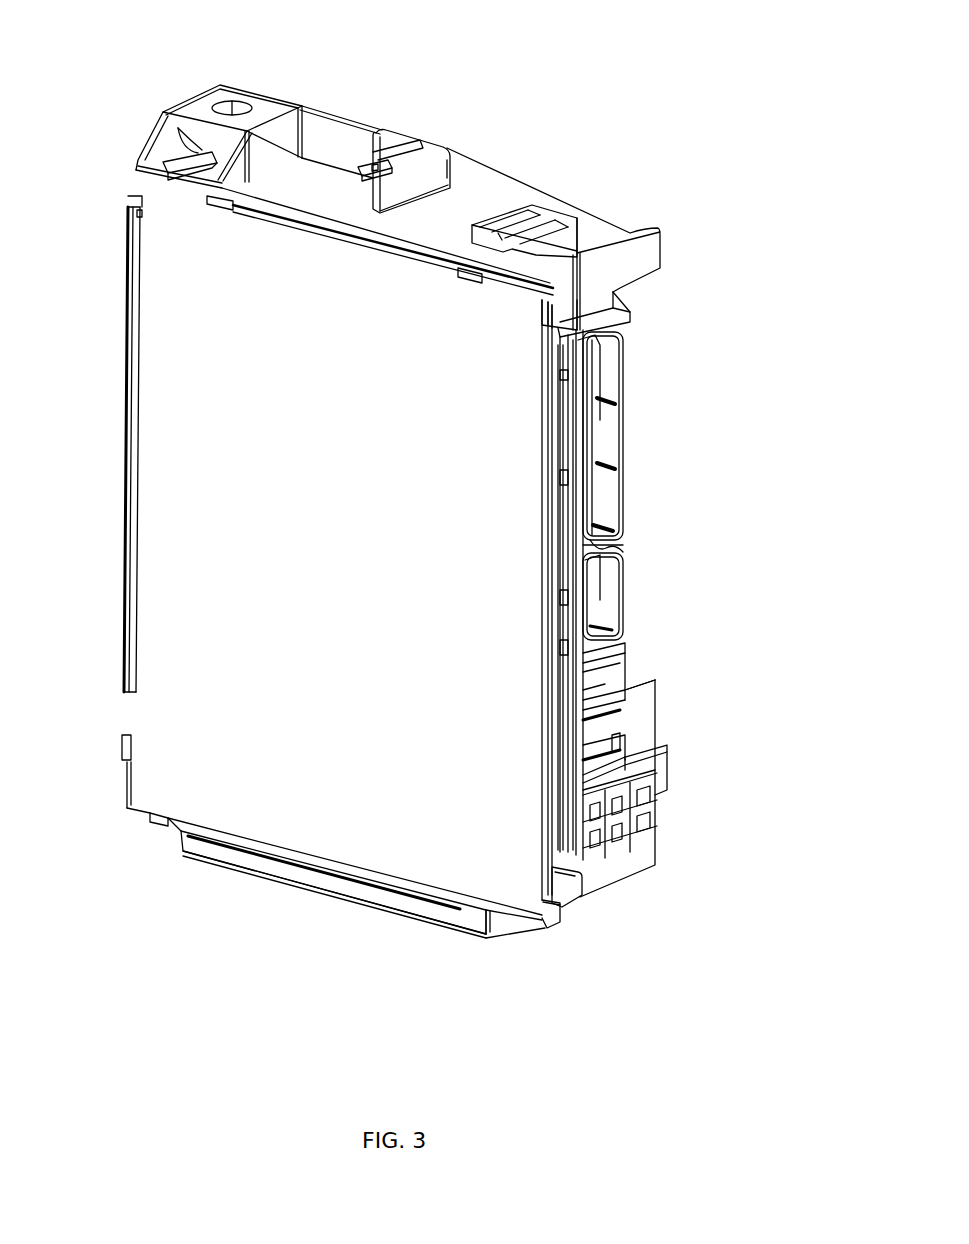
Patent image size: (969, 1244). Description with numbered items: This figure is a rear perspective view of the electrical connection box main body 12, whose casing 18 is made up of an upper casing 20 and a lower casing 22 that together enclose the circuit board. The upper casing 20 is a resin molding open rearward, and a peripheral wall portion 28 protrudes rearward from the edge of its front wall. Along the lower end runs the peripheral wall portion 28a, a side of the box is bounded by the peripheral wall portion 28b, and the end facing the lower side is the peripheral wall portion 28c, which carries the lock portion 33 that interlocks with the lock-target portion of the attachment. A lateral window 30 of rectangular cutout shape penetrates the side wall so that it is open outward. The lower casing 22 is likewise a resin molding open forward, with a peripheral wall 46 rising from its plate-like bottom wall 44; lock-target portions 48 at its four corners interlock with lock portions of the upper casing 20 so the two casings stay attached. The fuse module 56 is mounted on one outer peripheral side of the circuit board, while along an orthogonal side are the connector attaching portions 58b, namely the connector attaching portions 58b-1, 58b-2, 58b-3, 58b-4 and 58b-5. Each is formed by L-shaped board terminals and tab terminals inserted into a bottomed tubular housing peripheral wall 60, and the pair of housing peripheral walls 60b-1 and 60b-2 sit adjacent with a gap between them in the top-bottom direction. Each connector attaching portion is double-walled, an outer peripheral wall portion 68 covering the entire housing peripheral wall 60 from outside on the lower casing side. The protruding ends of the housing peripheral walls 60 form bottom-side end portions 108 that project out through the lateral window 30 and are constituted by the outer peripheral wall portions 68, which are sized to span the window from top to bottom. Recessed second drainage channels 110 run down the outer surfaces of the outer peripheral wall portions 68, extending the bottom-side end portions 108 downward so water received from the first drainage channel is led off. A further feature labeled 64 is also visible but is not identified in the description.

The electrical connection box main body 12 is at (446, 52).
The casing 18 is at (142, 47).
The upper casing 20 is at (176, 90).
The lower casing 22 is at (118, 289).
The peripheral wall portion 28 is at (628, 855).
The peripheral wall portion on the lower end side 28a is at (308, 862).
The peripheral wall portion on one widthwise side 28b is at (125, 786).
The peripheral wall portion on one lengthwise end 28c is at (470, 192).
The lateral window 30 is at (632, 320).
The lock portion 33 is at (411, 140).
The bottom wall 44 is at (507, 868).
The peripheral wall 46 is at (553, 910).
The lock-target portion 48 is at (565, 318).
The fuse module 56 is at (400, 948).
The connector attaching portions 58b is at (710, 578).
The connector attaching portion 58b-1 is at (626, 434).
The connector attaching portion 58b-2 is at (626, 592).
The connector attaching portion 58b-3 is at (606, 676).
The connector attaching portion 58b-4 is at (620, 728).
The connector attaching portion 58b-5 is at (666, 796).
The housing peripheral wall 60 is at (592, 680).
The housing peripheral wall 60b-1 is at (610, 440).
The housing peripheral wall 60b-2 is at (610, 598).
The partition 64 is at (622, 552).
The outer peripheral wall portion 68 is at (565, 542).
The bottom-side end portion 108 is at (552, 392).
The second drainage channel 110 is at (580, 427).